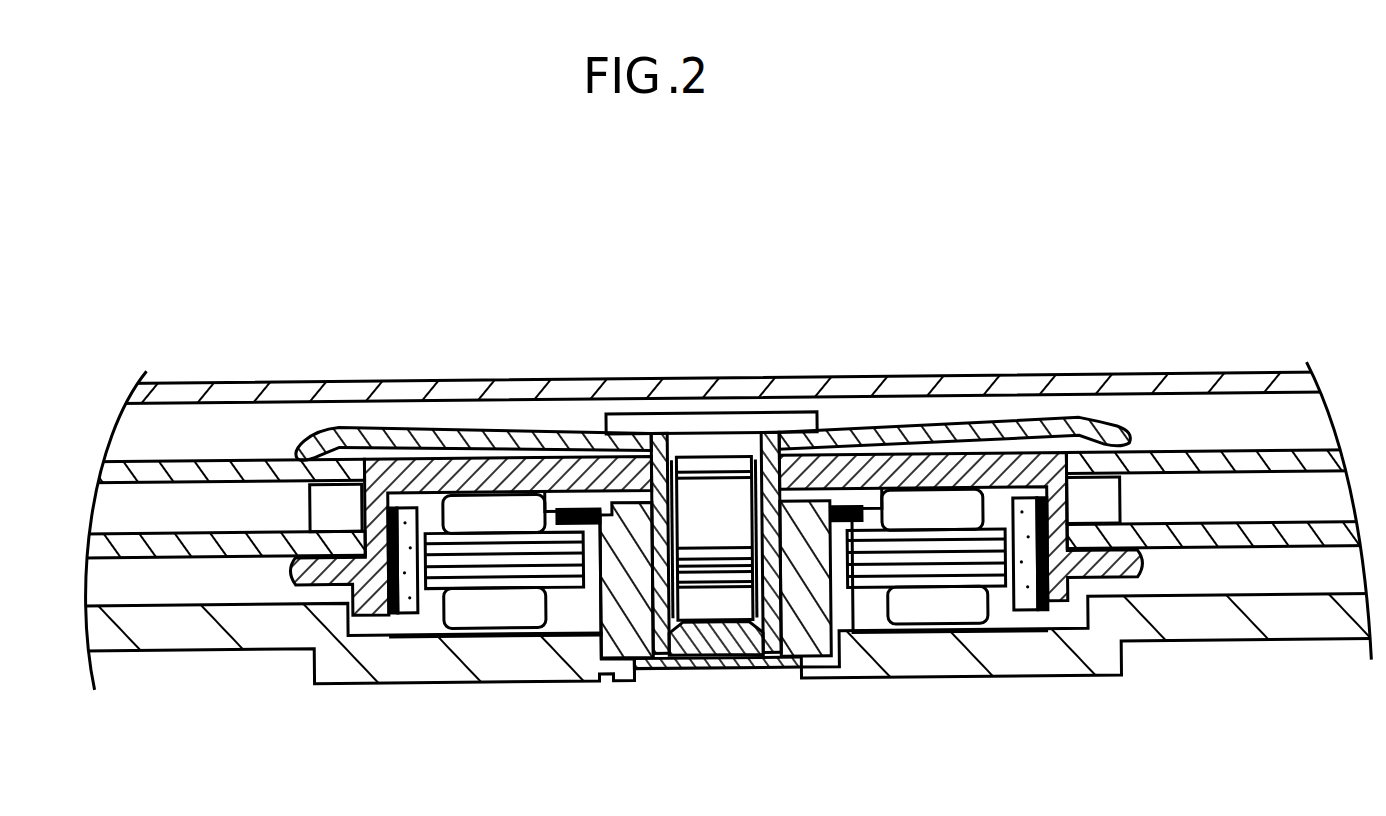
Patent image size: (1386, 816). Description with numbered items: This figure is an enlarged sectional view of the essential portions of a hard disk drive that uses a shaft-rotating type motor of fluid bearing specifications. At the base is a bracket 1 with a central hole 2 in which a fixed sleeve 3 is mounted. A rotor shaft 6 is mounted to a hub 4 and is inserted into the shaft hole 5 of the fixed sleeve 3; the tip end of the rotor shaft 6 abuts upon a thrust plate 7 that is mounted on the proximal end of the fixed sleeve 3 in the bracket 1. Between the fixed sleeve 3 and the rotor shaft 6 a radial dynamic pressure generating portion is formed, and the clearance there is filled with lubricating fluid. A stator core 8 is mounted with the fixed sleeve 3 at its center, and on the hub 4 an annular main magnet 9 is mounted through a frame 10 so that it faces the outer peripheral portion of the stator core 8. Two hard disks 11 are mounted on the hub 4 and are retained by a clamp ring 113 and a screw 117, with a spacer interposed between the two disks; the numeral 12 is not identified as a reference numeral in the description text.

The bracket 1 is at (980, 654).
The central hole 2 is at (608, 616).
The fixed sleeve 3 is at (845, 622).
The hub 4 is at (886, 467).
The shaft hole 5 is at (660, 617).
The rotor shaft 6 is at (733, 612).
The thrust plate 7 is at (748, 640).
The stator core 8 is at (496, 586).
The annular main magnet 9 is at (418, 590).
The frame 10 is at (392, 600).
The hard disks 11 is at (1196, 455).
The spacer 12 is at (1102, 497).
The clamp ring 113 is at (397, 432).
The screw 117 is at (687, 450).